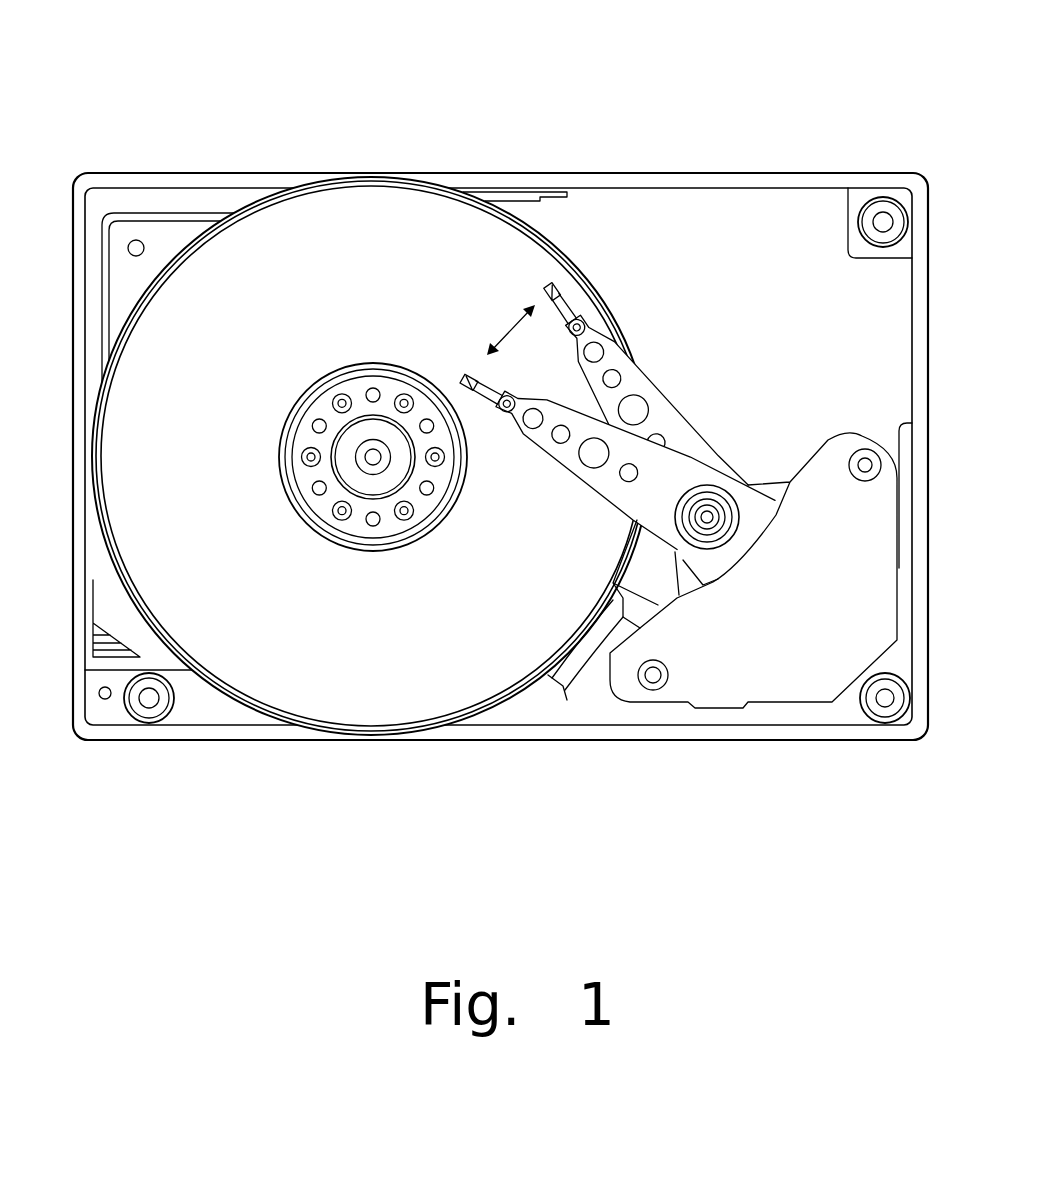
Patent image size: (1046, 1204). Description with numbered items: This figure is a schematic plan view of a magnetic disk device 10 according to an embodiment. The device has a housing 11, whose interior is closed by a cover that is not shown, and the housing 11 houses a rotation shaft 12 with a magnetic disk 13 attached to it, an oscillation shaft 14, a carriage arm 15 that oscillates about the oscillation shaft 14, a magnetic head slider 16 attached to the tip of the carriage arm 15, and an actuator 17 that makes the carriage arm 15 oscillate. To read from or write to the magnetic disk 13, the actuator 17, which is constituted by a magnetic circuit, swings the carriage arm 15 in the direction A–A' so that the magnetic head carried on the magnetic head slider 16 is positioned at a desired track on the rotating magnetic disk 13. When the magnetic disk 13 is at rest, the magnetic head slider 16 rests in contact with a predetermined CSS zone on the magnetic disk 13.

The magnetic disk device 10 is at (500, 374).
The housing 11 is at (712, 173).
The rotation shaft 12 is at (351, 438).
The magnetic disk 13 is at (286, 270).
The oscillation shaft 14 is at (707, 505).
The carriage arm 15 is at (578, 418).
The magnetic head slider 16 is at (465, 372).
The actuator 17 is at (838, 482).